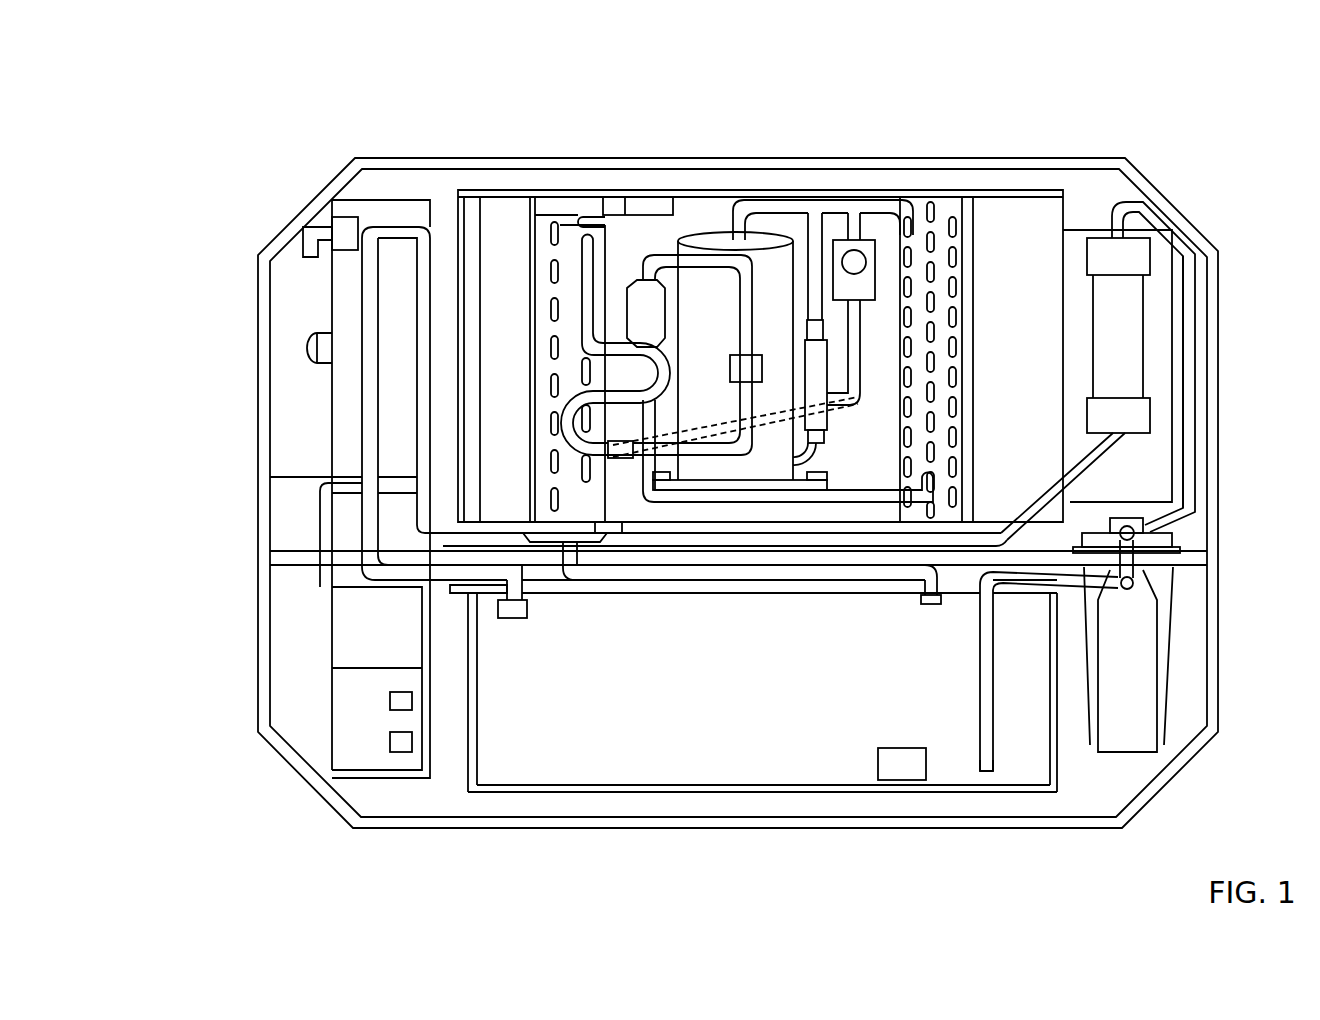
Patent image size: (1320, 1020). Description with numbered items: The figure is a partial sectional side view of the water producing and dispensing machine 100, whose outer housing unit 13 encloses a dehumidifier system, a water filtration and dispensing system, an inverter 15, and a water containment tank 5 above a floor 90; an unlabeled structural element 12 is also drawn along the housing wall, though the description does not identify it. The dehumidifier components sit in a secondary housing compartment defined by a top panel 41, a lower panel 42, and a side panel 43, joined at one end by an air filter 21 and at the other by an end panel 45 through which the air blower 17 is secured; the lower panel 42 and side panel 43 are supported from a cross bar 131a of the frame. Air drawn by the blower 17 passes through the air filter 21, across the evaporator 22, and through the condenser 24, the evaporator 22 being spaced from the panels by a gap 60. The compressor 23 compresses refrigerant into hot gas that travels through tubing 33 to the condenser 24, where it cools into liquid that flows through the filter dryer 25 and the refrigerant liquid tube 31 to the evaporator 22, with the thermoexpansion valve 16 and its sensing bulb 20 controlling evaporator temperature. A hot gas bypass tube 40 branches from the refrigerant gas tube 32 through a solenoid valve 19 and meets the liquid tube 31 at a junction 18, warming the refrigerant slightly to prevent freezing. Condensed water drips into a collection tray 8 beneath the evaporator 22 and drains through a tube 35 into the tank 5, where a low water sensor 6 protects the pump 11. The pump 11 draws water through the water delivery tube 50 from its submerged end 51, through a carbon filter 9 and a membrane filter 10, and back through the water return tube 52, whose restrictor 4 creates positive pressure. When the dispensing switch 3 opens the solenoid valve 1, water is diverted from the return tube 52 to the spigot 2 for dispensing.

The water producing and dispensing machine 100 is at (222, 98).
The solenoid valve 1 is at (345, 216).
The spigot 2 is at (305, 243).
The dispensing switch 3 is at (308, 342).
The restrictor 4 is at (517, 620).
The water containment tank 5 is at (670, 714).
The low water sensor 6 is at (894, 778).
The collection tray 8 is at (515, 517).
The carbon filter 9 is at (1167, 580).
The membrane filter 10 is at (1107, 366).
The pump 11 is at (1118, 714).
The side panel 12 is at (327, 312).
The outer housing unit 13 is at (258, 420).
The inverter 15 is at (360, 660).
The thermoexpansion valve 16 is at (730, 372).
The air blower 17 is at (1155, 463).
The junction 18 is at (607, 452).
The solenoid valve 19 is at (878, 268).
The thermoexpansion valve sensing bulb 20 is at (637, 200).
The air filter 21 is at (466, 186).
The evaporator 22 is at (524, 200).
The compressor 23 is at (716, 235).
The condenser 24 is at (931, 212).
The filter dryer 25 is at (662, 292).
The refrigerant liquid tube 31 is at (742, 293).
The refrigerant gas tube 32 is at (864, 205).
The tubing 33 is at (570, 413).
The tube 35 is at (862, 572).
The hot gas bypass tube 40 is at (857, 398).
The top panel 41 is at (472, 205).
The lower panel 42 is at (683, 528).
The side panel 43 is at (1027, 222).
The end panel 45 is at (1068, 205).
The water delivery tube 50 is at (1028, 507).
The end 51 is at (987, 772).
The water return tube 52 is at (360, 385).
The gap 60 is at (575, 213).
The floor 90 is at (448, 828).
The cross bar 131a is at (285, 565).